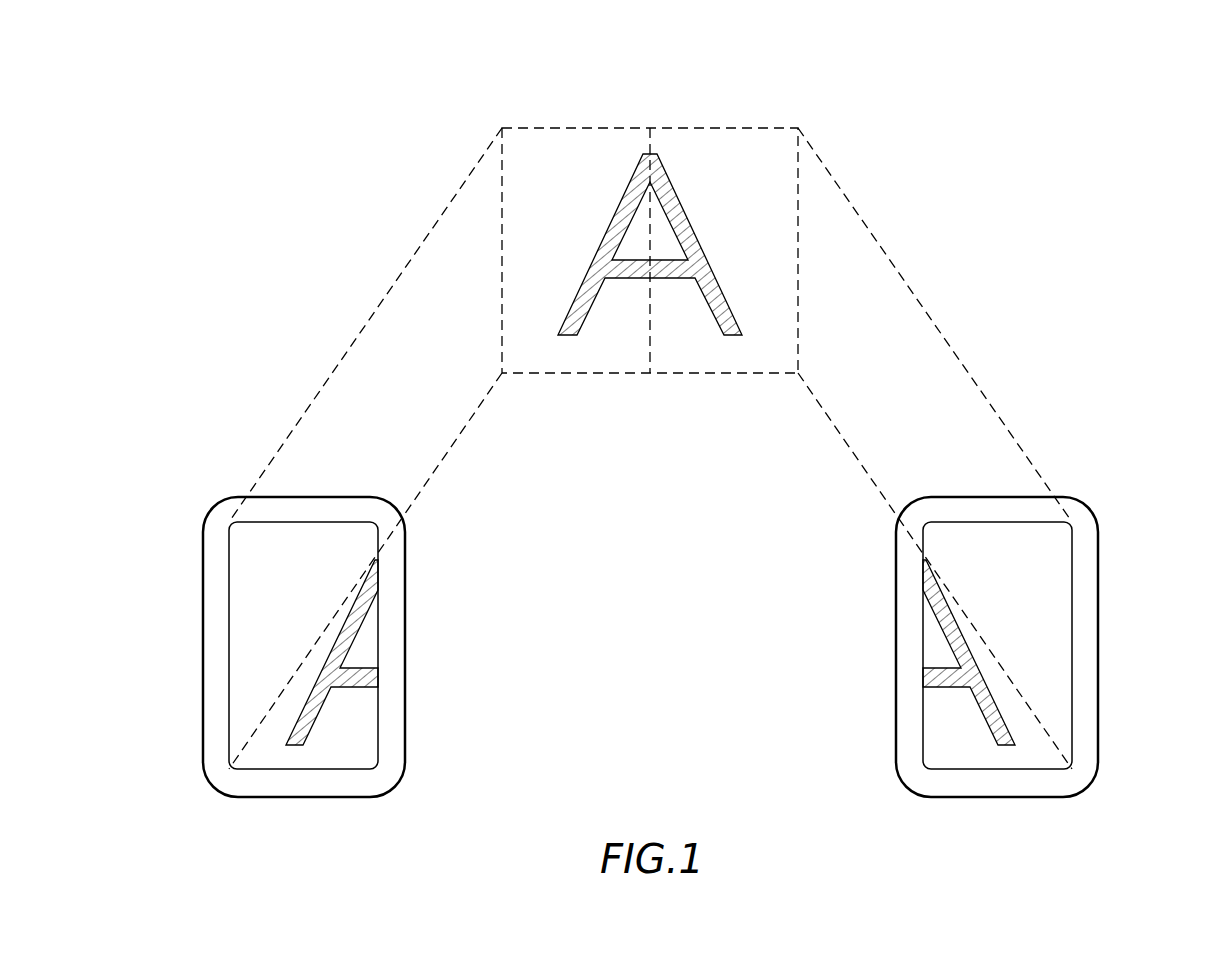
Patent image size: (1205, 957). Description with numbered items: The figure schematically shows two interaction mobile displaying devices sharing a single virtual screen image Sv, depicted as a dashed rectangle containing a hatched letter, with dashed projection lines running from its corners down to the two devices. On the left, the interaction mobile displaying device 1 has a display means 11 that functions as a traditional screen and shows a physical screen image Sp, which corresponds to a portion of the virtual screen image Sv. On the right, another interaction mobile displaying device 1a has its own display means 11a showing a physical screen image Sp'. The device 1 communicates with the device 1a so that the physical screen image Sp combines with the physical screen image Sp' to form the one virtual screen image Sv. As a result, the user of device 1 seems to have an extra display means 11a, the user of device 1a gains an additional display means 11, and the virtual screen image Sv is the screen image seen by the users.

The virtual screen image Sv is at (507, 113).
The interaction mobile displaying device 1 is at (271, 604).
The display means 11 is at (218, 648).
The physical screen image Sp is at (258, 645).
The interaction mobile displaying device 1a is at (1039, 601).
The display means 11a is at (1082, 648).
The physical screen image Sp' is at (1052, 645).